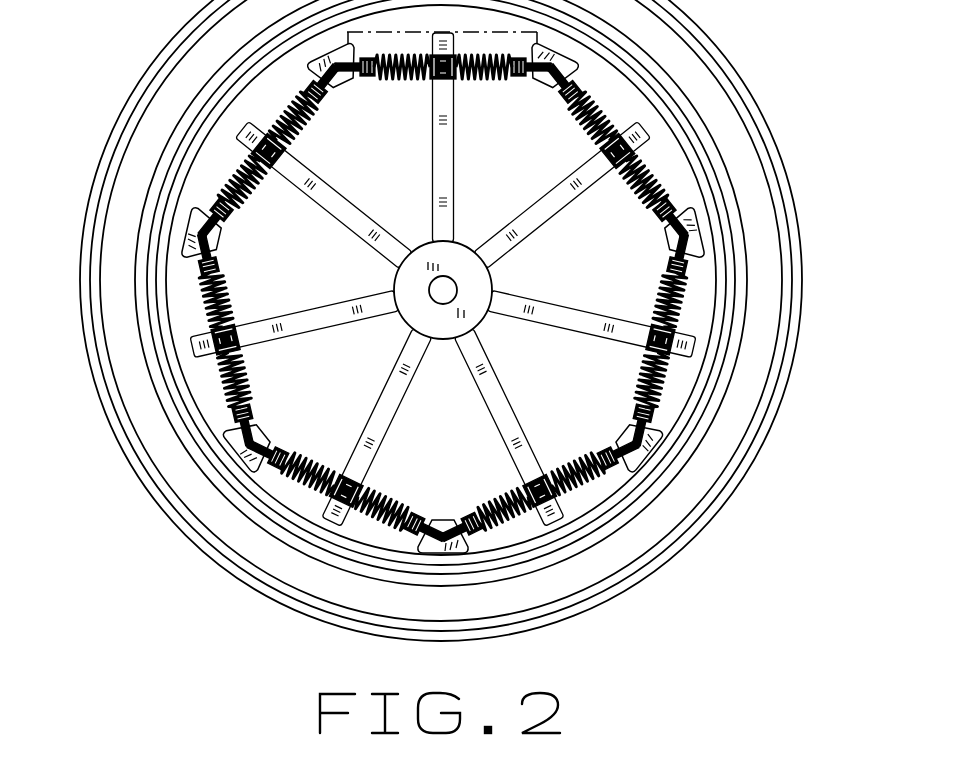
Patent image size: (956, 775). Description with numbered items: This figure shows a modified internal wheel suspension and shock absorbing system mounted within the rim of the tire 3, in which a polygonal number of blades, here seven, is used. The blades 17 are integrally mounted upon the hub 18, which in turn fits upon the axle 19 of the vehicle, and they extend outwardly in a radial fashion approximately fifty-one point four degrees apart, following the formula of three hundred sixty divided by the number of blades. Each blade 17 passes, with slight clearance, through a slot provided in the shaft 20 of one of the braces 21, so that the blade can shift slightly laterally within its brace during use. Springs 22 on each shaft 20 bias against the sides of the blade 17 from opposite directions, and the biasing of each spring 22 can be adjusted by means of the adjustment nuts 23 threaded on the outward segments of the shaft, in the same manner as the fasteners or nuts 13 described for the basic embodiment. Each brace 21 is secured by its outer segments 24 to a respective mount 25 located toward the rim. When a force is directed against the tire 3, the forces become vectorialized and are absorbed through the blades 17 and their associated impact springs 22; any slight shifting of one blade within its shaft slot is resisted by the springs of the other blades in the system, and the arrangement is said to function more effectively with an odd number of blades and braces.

The tire 3 is at (538, 84).
The nuts 13 is at (466, 243).
The blades 17 is at (455, 155).
The hub 18 is at (470, 312).
The axle 19 is at (449, 286).
The shafts 20 is at (237, 325).
The braces 21 is at (401, 84).
The springs 22 is at (482, 505).
The adjustment nuts 23 is at (280, 430).
The outer segments 24 is at (225, 223).
The mounts 25 is at (195, 231).